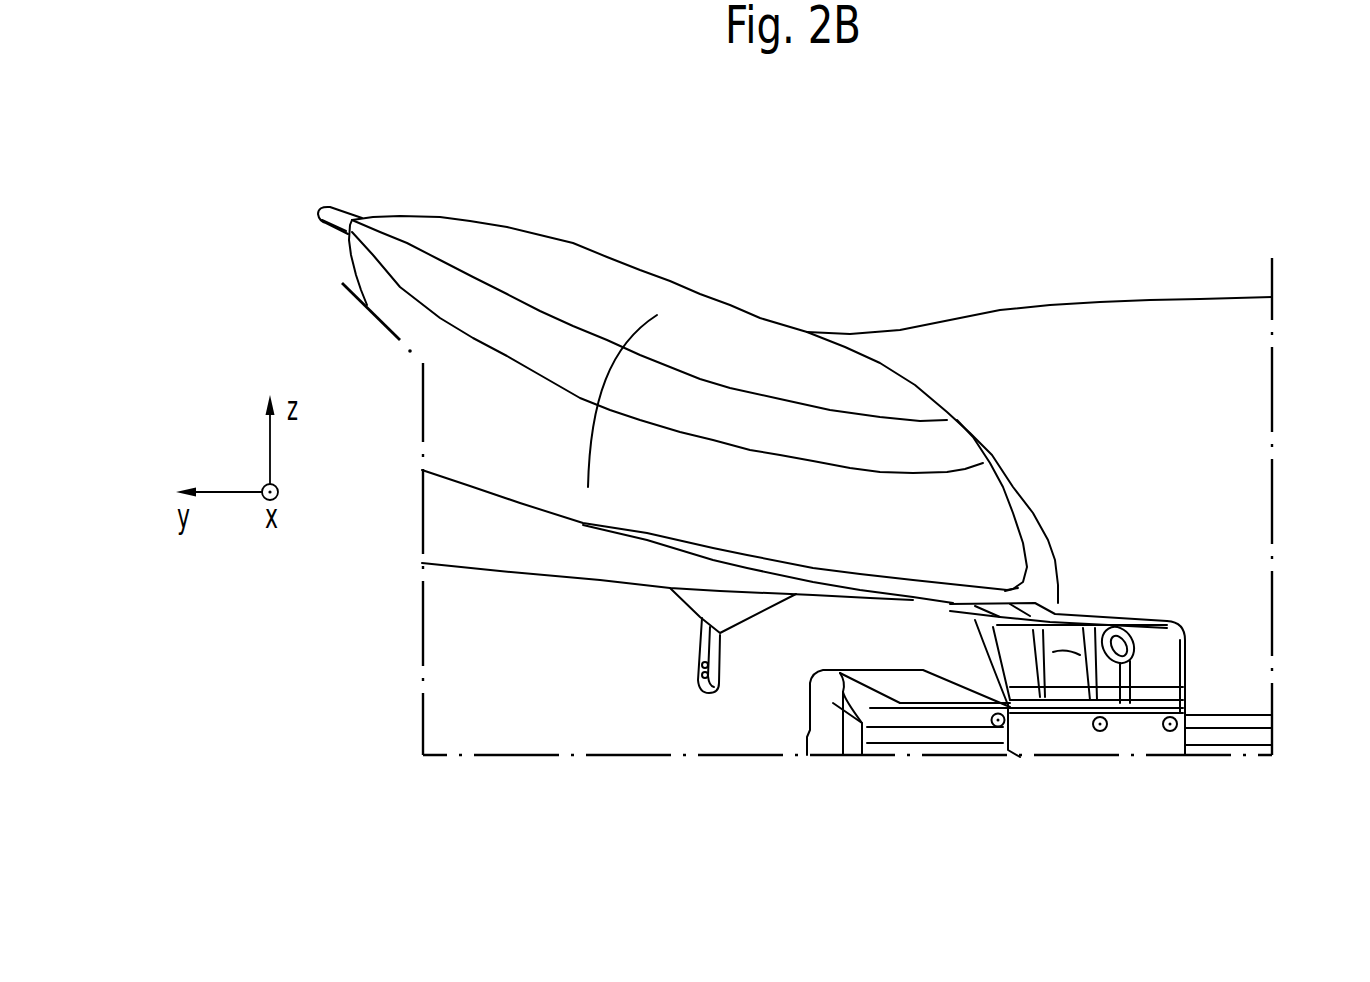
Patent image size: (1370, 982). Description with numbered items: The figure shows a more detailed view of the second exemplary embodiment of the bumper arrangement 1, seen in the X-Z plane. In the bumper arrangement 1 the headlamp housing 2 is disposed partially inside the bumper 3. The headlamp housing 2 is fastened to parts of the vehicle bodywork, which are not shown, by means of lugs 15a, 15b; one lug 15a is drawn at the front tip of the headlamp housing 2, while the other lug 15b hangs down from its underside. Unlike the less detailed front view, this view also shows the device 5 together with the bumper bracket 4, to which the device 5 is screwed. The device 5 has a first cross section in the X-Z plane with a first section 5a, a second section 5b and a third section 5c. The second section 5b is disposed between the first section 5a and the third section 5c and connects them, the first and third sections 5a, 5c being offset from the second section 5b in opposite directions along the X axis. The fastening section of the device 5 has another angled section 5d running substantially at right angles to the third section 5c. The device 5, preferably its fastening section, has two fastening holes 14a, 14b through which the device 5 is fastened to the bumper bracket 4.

The bumper arrangement 1 is at (1080, 104).
The headlamp housing 2 is at (523, 262).
The bumper 3 is at (521, 727).
The bumper bracket 4 is at (1247, 737).
The device 5 is at (1068, 736).
The first section 5a is at (1050, 606).
The second section 5b is at (1133, 653).
The third section 5c is at (1183, 688).
The angled section 5d is at (1045, 722).
The fastening hole 14a is at (1100, 732).
The fastening hole 14b is at (1170, 732).
The lug 15a is at (330, 205).
The lug 15b is at (700, 692).